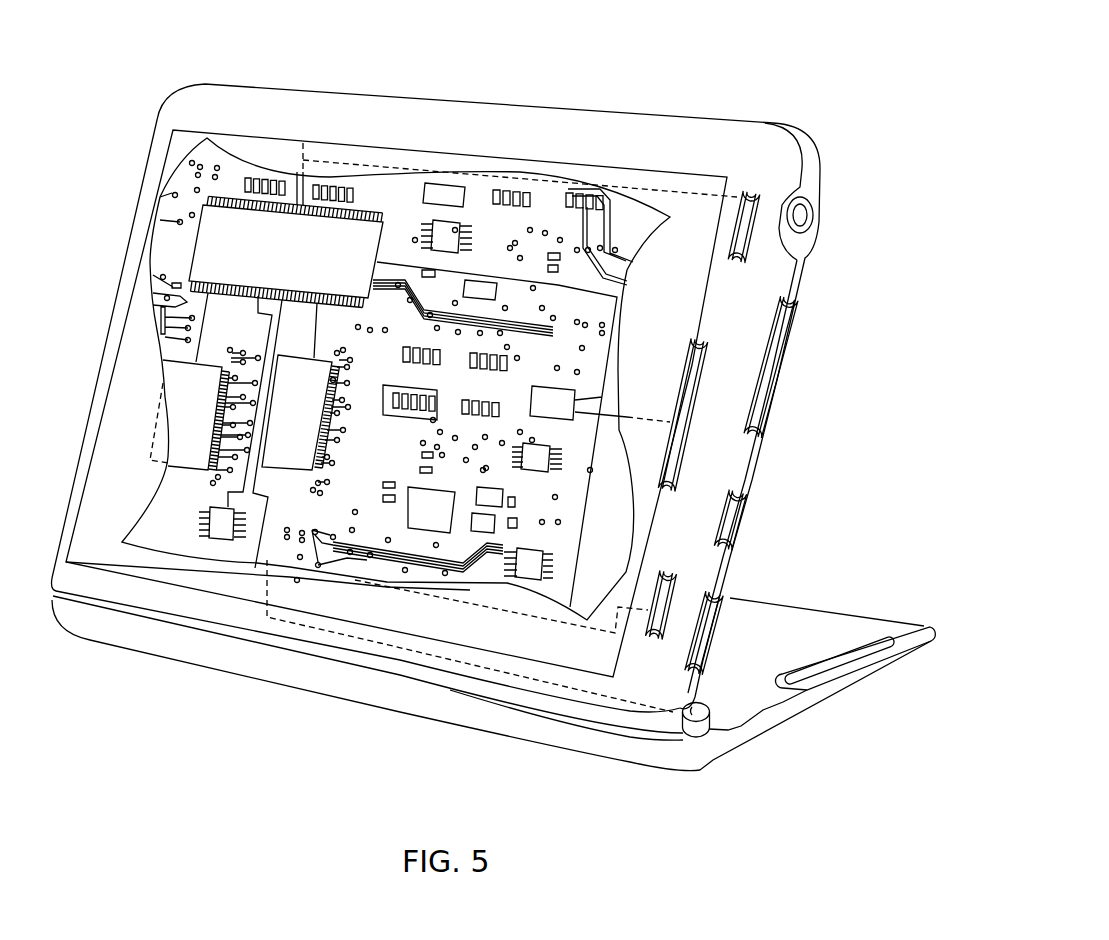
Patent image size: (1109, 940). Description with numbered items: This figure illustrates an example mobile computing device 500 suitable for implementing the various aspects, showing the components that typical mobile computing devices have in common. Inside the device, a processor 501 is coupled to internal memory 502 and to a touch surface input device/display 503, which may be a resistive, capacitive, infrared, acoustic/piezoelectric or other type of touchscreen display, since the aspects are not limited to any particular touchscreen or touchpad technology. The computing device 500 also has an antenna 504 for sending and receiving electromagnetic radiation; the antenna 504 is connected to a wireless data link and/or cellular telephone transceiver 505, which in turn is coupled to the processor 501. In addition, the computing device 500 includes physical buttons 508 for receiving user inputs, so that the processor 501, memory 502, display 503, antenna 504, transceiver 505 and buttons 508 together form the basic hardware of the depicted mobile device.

The mobile computing device 500 is at (752, 124).
The processor 501 is at (302, 260).
The internal memory 502 is at (210, 392).
The touch surface input device/display 503 is at (570, 162).
The antenna 504 is at (703, 724).
The cellular telephone transceiver 505 is at (315, 408).
The physical buttons 508 is at (752, 235).